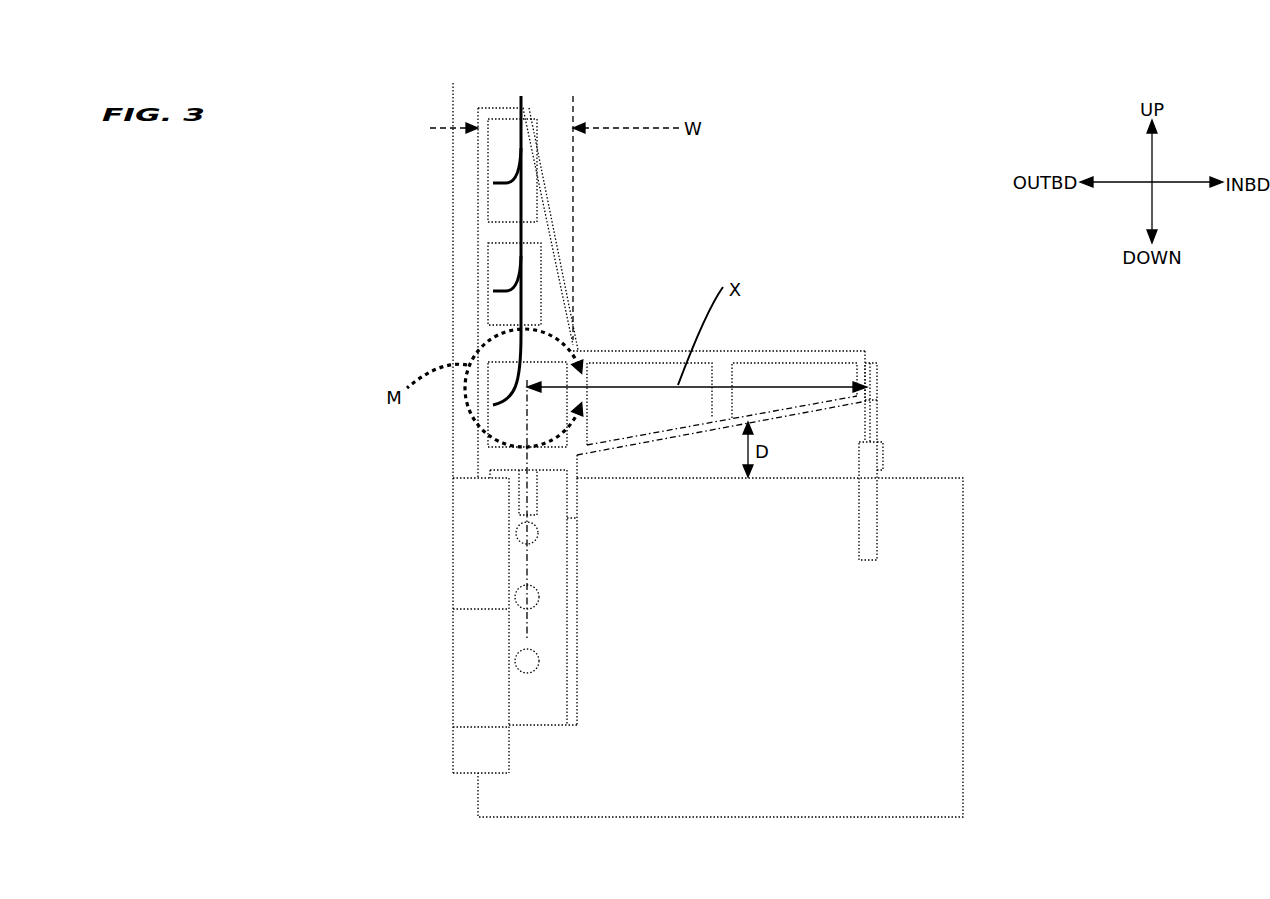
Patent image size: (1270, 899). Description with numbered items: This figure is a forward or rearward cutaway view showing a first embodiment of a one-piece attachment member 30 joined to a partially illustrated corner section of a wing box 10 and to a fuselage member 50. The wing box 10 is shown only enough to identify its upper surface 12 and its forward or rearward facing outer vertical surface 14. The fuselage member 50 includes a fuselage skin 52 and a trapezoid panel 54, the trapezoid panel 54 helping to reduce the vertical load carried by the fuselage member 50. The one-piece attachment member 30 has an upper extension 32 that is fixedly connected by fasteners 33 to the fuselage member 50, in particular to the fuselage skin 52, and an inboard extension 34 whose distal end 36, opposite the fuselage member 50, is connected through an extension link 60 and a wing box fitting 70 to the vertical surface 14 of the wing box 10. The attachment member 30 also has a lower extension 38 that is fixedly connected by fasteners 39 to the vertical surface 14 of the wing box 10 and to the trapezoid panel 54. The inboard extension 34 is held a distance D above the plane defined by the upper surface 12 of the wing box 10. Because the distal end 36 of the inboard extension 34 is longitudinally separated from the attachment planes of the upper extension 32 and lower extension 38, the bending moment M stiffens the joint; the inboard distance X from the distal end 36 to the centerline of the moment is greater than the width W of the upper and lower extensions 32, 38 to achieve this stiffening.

The wing box 10 is at (793, 631).
The upper surface 12 is at (943, 477).
The outer vertical surface 14 is at (623, 733).
The one-piece attachment member 30 is at (603, 353).
The upper extension 32 is at (535, 190).
The fasteners 33 is at (527, 262).
The inboard extension 34 is at (723, 365).
The distal end 36 is at (862, 368).
The lower extension 38 is at (535, 685).
The fasteners 39 is at (527, 661).
The fuselage member 50 is at (400, 476).
The fuselage skin 52 is at (458, 266).
The trapezoid panel 54 is at (461, 578).
The extension link 60 is at (868, 418).
The wing box fitting 70 is at (868, 508).